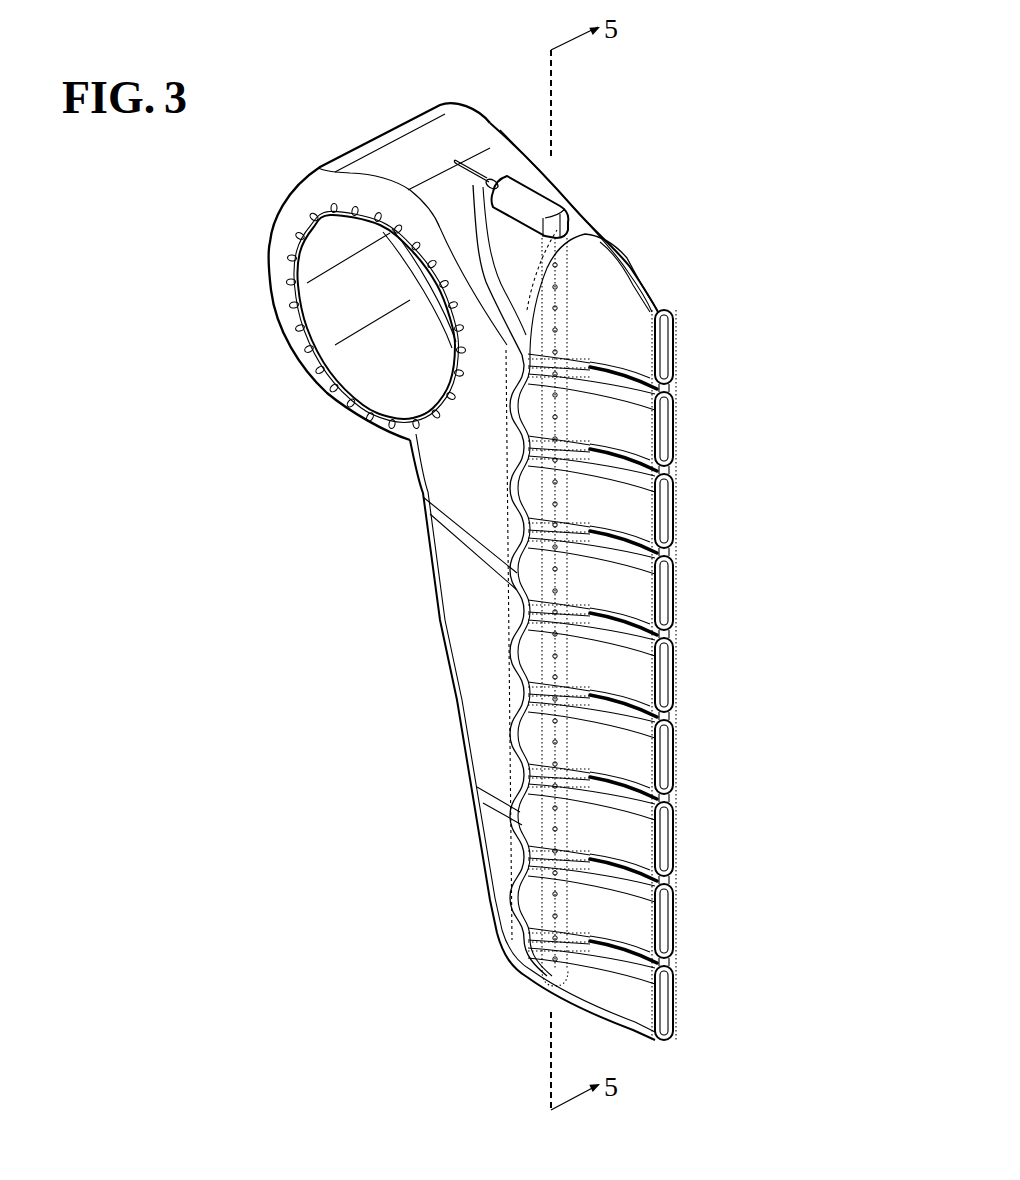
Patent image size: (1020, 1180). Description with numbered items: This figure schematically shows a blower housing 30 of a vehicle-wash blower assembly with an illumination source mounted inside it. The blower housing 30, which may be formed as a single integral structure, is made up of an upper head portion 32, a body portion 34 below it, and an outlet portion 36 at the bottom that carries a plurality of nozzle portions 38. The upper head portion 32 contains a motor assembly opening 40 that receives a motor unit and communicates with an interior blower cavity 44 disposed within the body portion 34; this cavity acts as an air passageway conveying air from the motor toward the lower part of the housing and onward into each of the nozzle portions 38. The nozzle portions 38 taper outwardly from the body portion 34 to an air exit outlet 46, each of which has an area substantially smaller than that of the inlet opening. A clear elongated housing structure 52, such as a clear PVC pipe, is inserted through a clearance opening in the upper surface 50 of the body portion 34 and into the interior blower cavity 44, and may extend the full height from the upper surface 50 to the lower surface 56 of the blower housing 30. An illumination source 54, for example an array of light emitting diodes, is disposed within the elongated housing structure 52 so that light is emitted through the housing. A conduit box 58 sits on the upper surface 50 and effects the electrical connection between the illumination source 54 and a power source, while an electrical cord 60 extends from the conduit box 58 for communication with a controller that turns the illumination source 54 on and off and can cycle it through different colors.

The blower housing 30 is at (657, 277).
The upper head portion 32 is at (430, 130).
The body portion 34 is at (490, 732).
The outlet portion 36 is at (571, 983).
The nozzle portions 38 is at (647, 922).
The motor assembly opening 40 is at (317, 253).
The interior blower cavity 44 is at (488, 631).
The air exit outlet 46 is at (672, 830).
The upper surface 50 is at (583, 220).
The elongated housing structure 52 is at (573, 651).
The illumination source 54 is at (553, 767).
The lower surface 56 is at (513, 938).
The conduit box 58 is at (552, 203).
The electrical cord 60 is at (470, 165).